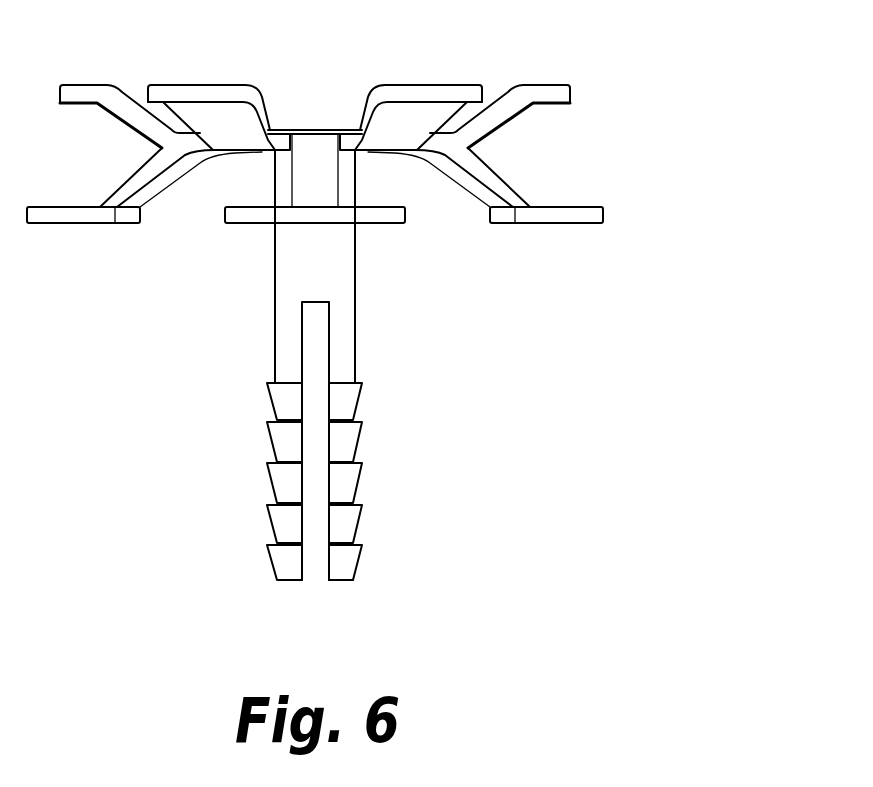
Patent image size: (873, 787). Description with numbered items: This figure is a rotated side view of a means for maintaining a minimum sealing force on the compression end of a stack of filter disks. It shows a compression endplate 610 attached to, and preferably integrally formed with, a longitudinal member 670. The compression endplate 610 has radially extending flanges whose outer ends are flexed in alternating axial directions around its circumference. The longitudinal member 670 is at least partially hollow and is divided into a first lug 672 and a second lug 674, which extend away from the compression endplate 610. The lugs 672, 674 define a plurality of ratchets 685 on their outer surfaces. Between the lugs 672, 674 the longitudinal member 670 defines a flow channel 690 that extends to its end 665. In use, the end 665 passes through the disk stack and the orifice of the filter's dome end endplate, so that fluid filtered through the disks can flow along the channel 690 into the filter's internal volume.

The compression endplate 610 is at (628, 135).
The longitudinal member 670 is at (357, 272).
The first lug 672 is at (288, 343).
The second lug 674 is at (340, 360).
The ratchets 685 is at (273, 500).
The flow channel 690 is at (315, 568).
The end of longitudinal member 665 is at (337, 582).